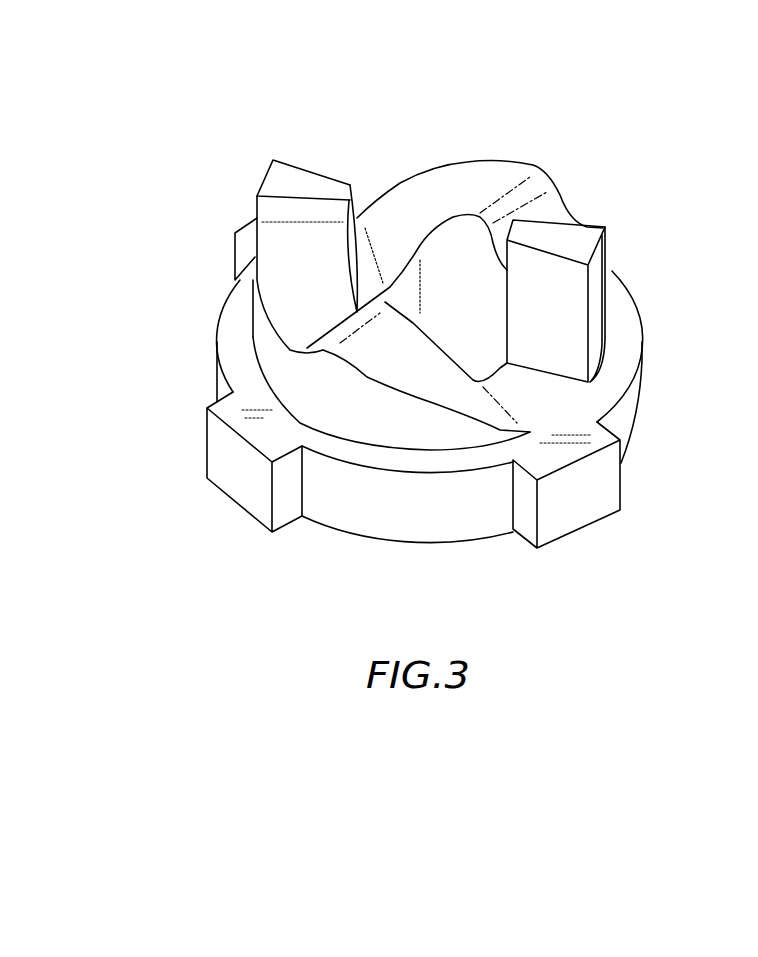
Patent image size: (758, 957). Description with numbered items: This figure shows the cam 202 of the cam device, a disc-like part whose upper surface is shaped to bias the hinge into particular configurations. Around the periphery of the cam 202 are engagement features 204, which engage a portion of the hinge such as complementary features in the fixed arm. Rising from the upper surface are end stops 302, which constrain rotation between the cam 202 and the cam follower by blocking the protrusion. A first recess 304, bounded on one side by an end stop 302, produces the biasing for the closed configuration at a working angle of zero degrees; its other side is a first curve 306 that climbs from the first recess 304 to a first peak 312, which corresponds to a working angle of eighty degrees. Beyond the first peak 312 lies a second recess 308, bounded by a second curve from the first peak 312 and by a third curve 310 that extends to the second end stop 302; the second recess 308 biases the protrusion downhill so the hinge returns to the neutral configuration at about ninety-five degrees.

The cam 202 is at (493, 523).
The engagement features 204 is at (243, 482).
The end stop 302 is at (315, 164).
The first recess 304 is at (552, 410).
The first curve 306 is at (428, 383).
The second recess 308 is at (321, 325).
The third curve 310 is at (304, 242).
The first peak 312 is at (360, 376).